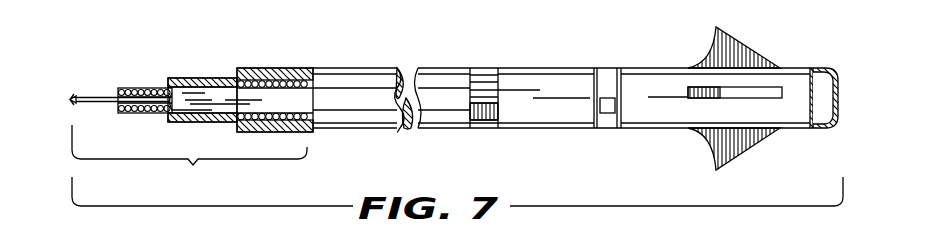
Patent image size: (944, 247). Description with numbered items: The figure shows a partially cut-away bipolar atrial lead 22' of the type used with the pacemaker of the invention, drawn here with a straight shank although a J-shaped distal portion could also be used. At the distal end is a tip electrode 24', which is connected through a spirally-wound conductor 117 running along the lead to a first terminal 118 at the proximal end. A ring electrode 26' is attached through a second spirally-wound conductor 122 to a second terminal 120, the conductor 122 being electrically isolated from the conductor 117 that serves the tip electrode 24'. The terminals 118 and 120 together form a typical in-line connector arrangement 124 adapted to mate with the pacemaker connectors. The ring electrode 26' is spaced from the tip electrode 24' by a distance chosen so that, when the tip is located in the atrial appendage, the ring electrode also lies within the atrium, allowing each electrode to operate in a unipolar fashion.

The first terminal 118 is at (93, 92).
The spirally-wound conductor 117 is at (145, 88).
The second terminal 120 is at (208, 78).
The spirally-wound conductor 122 is at (279, 75).
The connector arrangement 124 is at (189, 161).
The ring electrode 26' is at (466, 80).
The lead 22' is at (561, 91).
The tip electrode 24' is at (823, 77).